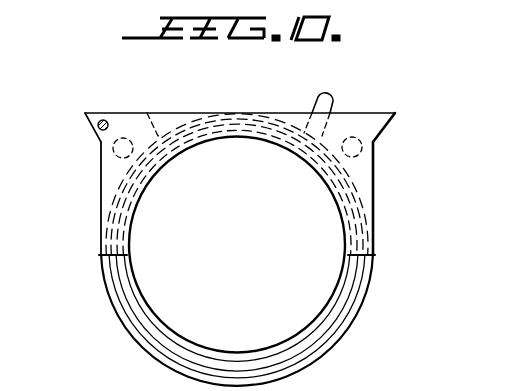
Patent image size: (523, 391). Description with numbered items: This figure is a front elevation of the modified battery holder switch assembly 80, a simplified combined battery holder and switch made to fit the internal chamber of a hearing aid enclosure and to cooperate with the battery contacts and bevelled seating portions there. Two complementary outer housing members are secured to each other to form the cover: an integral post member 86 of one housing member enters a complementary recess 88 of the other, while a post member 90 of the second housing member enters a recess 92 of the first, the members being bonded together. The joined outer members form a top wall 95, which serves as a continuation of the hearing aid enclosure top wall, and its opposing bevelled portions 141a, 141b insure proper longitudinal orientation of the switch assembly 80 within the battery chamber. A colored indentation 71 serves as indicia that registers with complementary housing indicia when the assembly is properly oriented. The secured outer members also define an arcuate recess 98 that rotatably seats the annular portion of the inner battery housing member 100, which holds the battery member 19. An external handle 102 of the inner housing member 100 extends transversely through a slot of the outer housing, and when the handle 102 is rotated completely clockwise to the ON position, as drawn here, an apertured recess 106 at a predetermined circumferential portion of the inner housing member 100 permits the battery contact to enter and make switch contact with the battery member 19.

The battery holder switch assembly 80 is at (384, 98).
The colored indentation 71 is at (98, 114).
The bevelled portion 141a is at (93, 131).
The bevelled portion 141b is at (378, 131).
The post member 86 is at (115, 111).
The recess 88 is at (124, 137).
The post member 90 is at (401, 160).
The recess 92 is at (361, 157).
The top wall 95 is at (187, 93).
The arcuate recess 98 is at (198, 115).
The external handle 102 is at (312, 101).
The battery member 19 is at (251, 226).
The inner battery housing member 100 is at (128, 332).
The apertured recess 106 is at (356, 305).